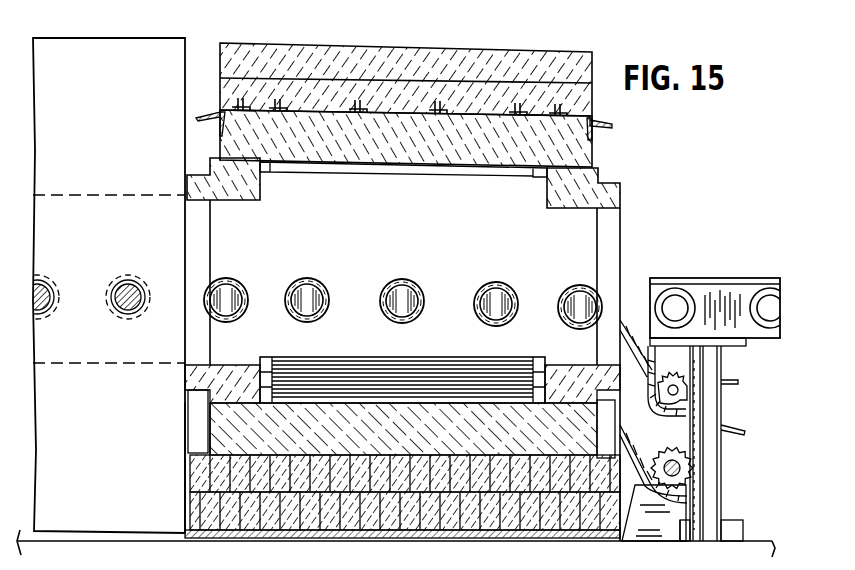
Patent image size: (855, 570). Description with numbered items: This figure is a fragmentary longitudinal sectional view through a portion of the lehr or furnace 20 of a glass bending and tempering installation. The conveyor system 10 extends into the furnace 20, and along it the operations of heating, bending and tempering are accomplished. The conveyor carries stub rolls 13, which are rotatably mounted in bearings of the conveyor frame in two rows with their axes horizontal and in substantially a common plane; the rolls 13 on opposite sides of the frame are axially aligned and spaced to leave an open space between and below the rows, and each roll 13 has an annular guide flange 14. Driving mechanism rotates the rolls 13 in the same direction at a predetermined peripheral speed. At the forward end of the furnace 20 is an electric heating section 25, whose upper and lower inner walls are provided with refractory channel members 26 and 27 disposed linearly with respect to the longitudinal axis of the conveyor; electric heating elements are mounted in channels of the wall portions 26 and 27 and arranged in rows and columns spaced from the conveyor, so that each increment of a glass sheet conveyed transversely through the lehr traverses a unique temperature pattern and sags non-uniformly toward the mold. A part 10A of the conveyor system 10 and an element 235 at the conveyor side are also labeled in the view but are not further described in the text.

The lehr or furnace 20 is at (111, 48).
The refractory channel member 26 is at (266, 176).
The stub rolls 13 is at (233, 280).
The annular guide flanges 14 is at (318, 281).
The refractory channel member 27 is at (259, 360).
The electric heating section 25 is at (185, 428).
The conveyor system 10 is at (711, 270).
The roller 10A is at (742, 322).
The bracket 235 is at (680, 407).